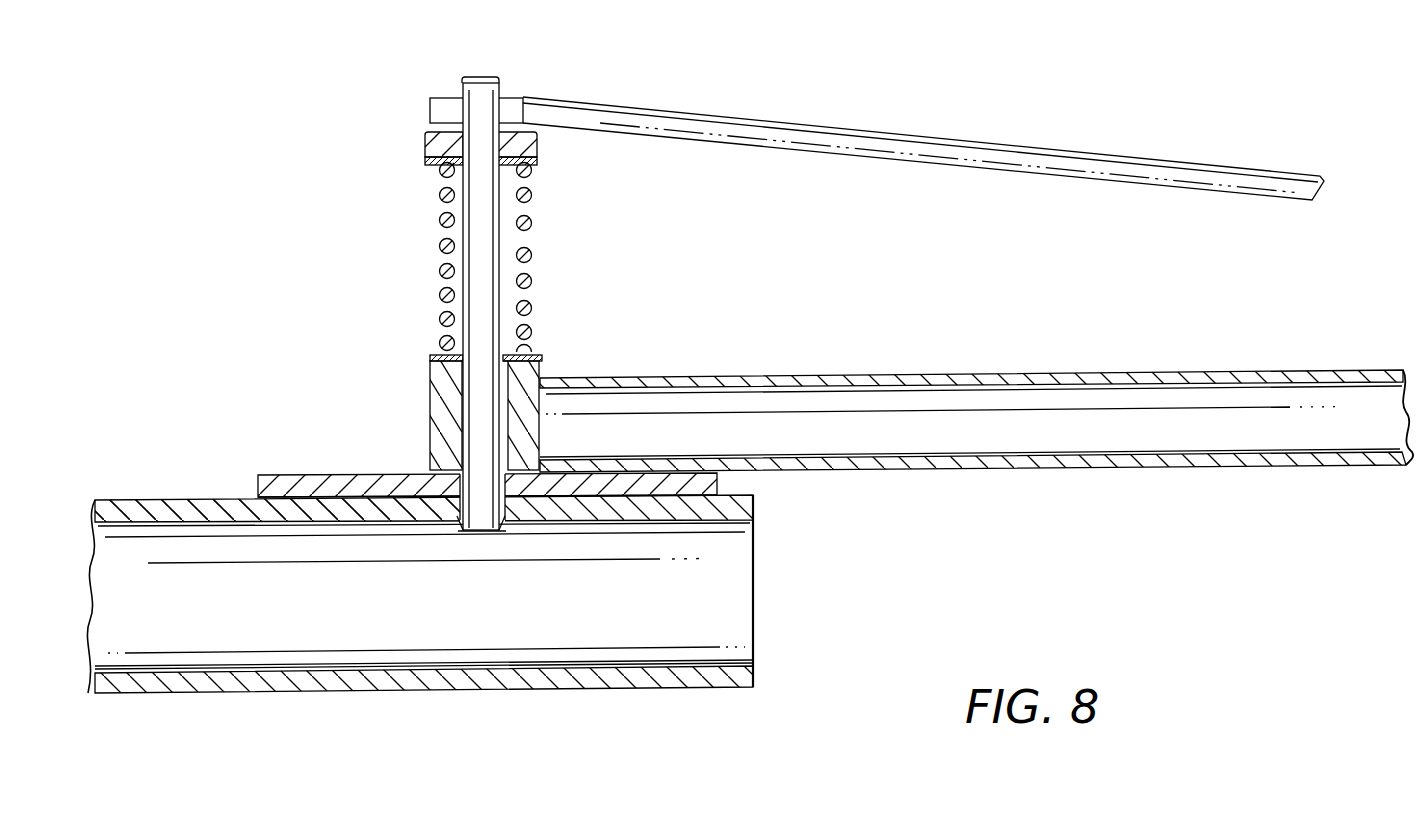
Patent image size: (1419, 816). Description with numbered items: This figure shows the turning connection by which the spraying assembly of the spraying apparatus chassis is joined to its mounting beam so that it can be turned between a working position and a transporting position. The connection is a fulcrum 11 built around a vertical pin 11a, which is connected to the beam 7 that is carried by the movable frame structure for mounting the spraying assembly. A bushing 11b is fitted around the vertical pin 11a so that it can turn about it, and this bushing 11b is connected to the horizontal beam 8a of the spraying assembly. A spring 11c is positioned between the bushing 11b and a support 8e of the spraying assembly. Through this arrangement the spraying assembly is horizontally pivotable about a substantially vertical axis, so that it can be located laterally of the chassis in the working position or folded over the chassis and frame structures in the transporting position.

The beam 7 is at (237, 507).
The horizontal beam 8a is at (985, 375).
The support 8e is at (1002, 155).
The fulcrum 11 is at (336, 135).
The vertical pin 11a is at (485, 534).
The bushing 11b is at (440, 402).
The spring 11c is at (535, 223).